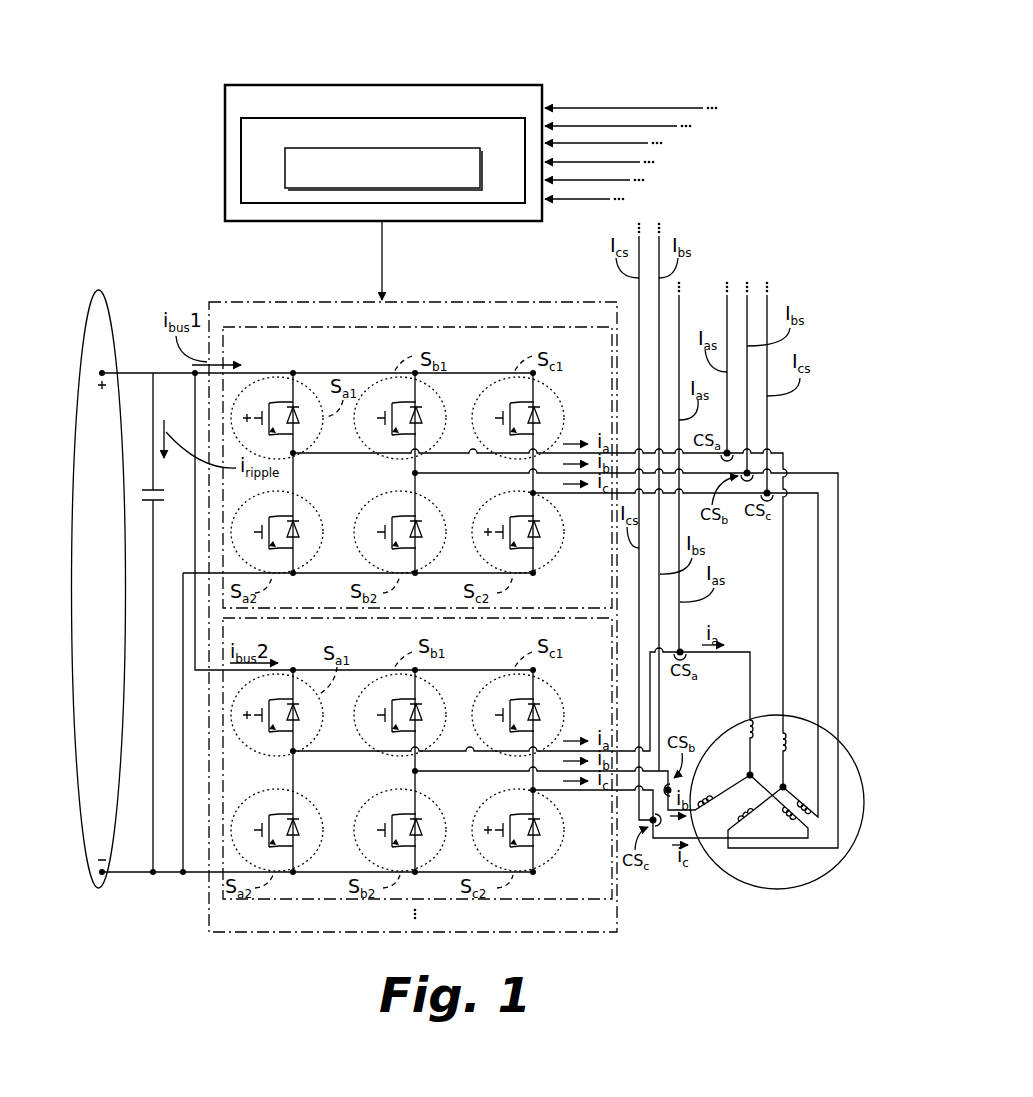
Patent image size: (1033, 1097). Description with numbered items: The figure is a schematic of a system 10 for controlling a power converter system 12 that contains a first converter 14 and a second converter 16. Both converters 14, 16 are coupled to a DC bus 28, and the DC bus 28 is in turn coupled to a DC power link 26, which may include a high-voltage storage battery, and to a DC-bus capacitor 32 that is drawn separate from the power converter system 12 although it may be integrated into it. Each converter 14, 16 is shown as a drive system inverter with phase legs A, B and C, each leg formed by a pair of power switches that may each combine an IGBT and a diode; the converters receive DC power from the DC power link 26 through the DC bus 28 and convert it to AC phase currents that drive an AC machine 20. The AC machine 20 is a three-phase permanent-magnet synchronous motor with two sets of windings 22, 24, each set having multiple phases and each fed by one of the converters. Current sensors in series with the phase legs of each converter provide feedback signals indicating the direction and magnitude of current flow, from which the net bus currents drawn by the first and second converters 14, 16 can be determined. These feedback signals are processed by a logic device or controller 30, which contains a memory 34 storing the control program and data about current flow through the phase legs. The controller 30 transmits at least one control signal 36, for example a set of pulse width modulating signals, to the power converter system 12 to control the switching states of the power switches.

The system 10 is at (630, 48).
The power converter system 12 is at (323, 300).
The first converter 14 is at (522, 300).
The second converter 16 is at (223, 893).
The AC machine 20 is at (714, 740).
The first set of windings 22 is at (789, 783).
The second set of windings 24 is at (746, 772).
The DC power link 26 is at (98, 290).
The DC bus 28 is at (165, 369).
The controller 30 is at (383, 84).
The DC-bus capacitor 32 is at (157, 503).
The memory 34 is at (513, 117).
The control signal 36 is at (378, 253).